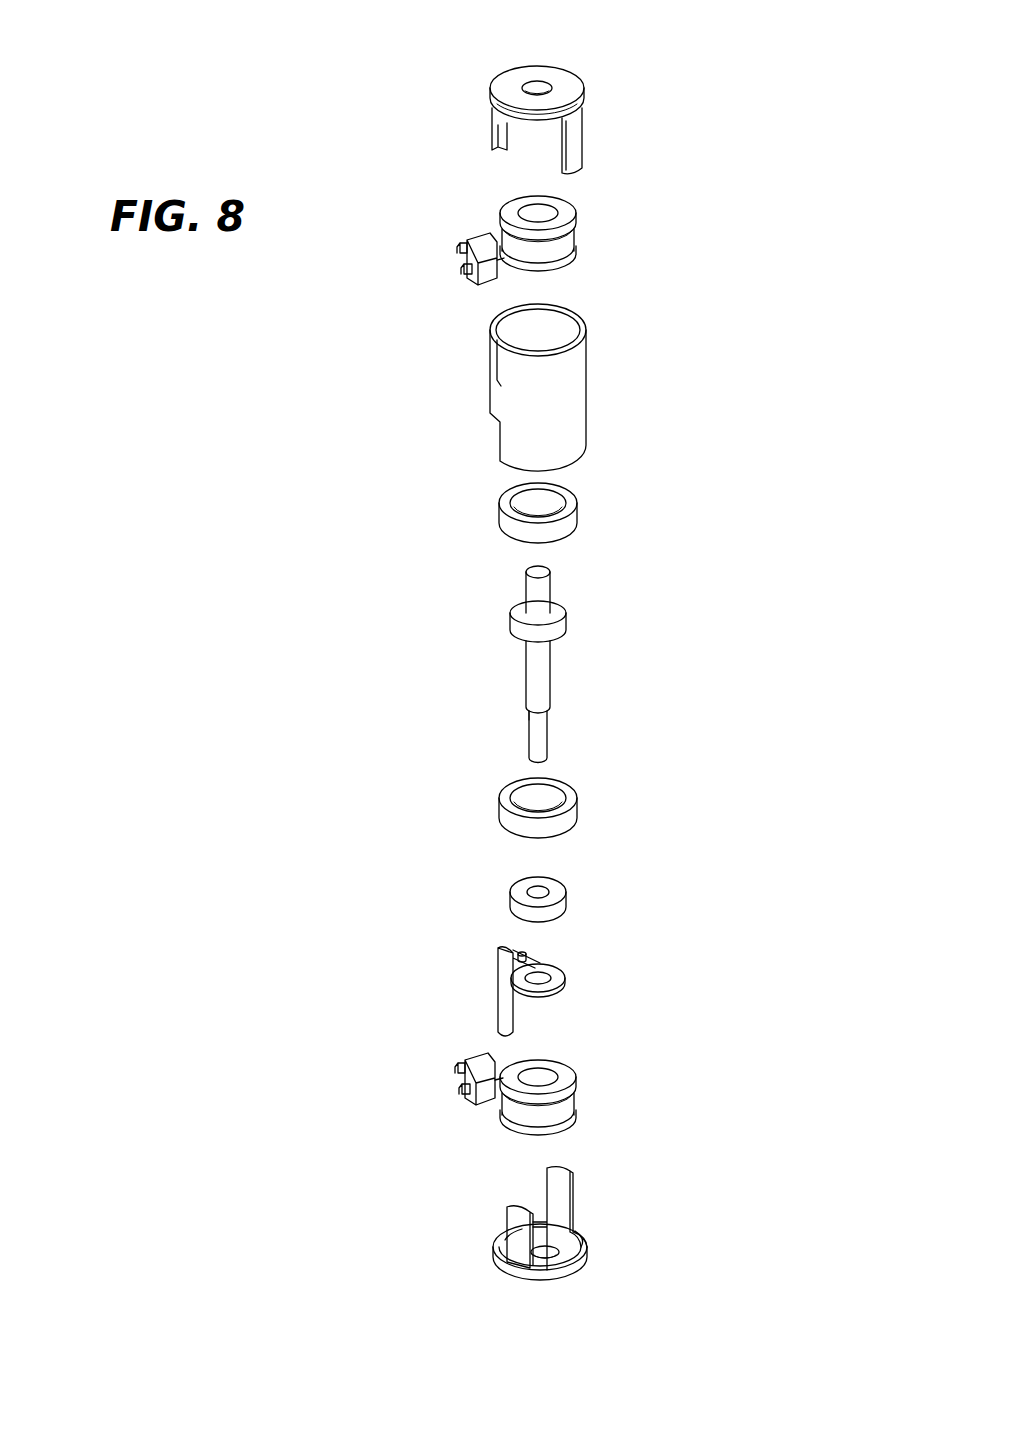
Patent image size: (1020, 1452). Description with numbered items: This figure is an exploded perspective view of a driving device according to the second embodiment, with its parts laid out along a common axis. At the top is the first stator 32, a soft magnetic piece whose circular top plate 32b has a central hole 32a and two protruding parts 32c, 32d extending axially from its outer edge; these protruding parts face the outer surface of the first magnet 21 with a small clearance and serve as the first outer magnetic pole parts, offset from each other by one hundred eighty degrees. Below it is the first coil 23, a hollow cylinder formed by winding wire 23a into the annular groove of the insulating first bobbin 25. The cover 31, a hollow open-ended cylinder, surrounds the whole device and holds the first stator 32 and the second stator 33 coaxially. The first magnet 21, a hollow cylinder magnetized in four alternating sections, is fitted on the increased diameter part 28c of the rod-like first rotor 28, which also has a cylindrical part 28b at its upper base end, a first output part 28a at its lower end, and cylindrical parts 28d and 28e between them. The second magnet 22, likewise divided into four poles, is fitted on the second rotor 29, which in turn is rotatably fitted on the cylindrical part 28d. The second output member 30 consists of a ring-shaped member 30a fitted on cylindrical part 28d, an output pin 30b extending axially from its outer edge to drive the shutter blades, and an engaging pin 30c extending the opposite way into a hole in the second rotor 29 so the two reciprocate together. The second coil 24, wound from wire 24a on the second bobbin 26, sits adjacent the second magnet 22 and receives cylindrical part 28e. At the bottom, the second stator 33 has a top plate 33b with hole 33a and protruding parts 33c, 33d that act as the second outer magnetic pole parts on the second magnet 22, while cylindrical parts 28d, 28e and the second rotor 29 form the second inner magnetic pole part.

The first magnet 21 is at (574, 520).
The second magnet 22 is at (503, 814).
The first coil 23 is at (528, 234).
The wire 23a is at (566, 249).
The second coil 24 is at (581, 1071).
The wire 24a is at (573, 1105).
The first bobbin 25 is at (510, 211).
The second bobbin 26 is at (573, 1068).
The first rotor 28 is at (520, 656).
The first output part 28a is at (545, 733).
The cylindrical part 28b is at (530, 583).
The increased diameter part 28c is at (558, 632).
The cylindrical part 28d is at (534, 658).
The cylindrical part 28e is at (533, 693).
The second rotor 29 is at (560, 900).
The second output member 30 is at (505, 979).
The ring-shaped member 30a is at (560, 984).
The output pin 30b is at (498, 991).
The engaging pin 30c is at (526, 956).
The cover 31 is at (578, 368).
The first stator 32 is at (518, 87).
The hole 32a is at (538, 86).
The top plate 32b is at (570, 90).
The protruding part 32c is at (580, 140).
The protruding part 32d is at (497, 134).
The second stator 33 is at (520, 1259).
The hole 33a is at (553, 1256).
The top plate 33b is at (567, 1249).
The protruding part 33c is at (567, 1190).
The protruding part 33d is at (517, 1233).